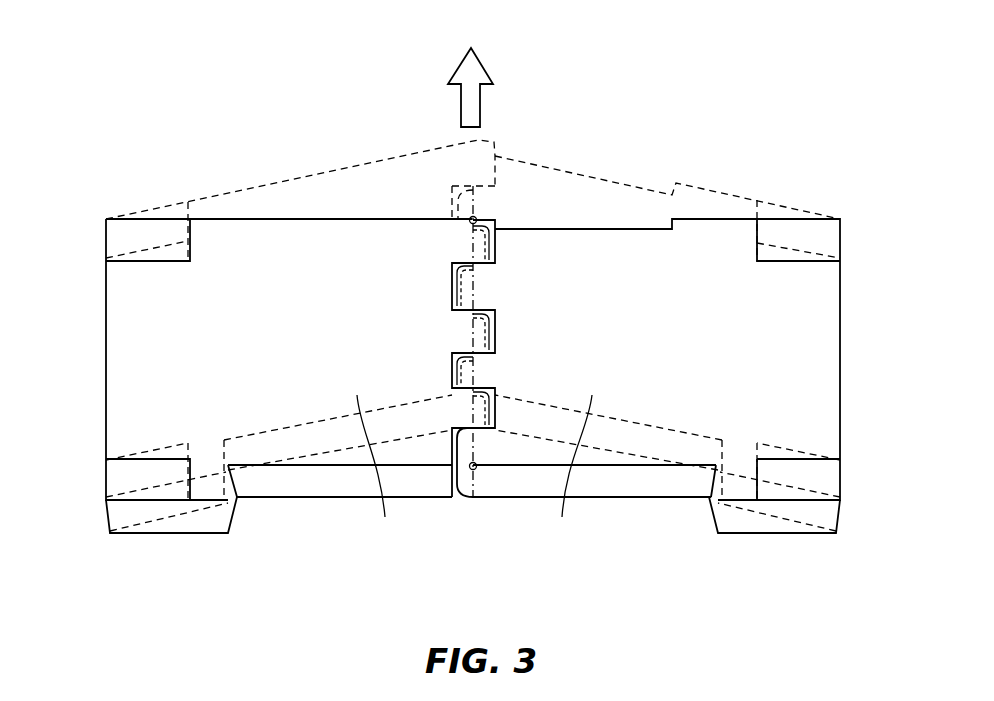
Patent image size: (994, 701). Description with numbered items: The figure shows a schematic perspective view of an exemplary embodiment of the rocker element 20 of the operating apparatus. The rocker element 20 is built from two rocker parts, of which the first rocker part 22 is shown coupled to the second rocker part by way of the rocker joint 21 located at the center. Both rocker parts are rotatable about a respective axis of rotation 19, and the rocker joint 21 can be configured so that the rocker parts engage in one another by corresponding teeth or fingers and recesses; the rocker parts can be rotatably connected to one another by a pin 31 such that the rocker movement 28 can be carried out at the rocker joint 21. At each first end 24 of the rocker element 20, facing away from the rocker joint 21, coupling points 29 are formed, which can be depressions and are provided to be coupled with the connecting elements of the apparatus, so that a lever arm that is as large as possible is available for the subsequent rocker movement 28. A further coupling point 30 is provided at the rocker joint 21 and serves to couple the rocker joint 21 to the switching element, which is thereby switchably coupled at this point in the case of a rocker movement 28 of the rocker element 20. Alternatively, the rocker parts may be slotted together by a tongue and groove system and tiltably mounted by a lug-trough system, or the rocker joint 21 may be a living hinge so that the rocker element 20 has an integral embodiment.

The axis of rotation 19 is at (306, 501).
The rocker element 20 is at (297, 150).
The rocker joint 21 is at (473, 470).
The first rocker part 22 is at (474, 477).
The first end 24 is at (172, 374).
The rocker movement 28 is at (485, 65).
The coupling point 29 is at (120, 232).
The further coupling point 30 is at (487, 288).
The pin 31 is at (472, 216).